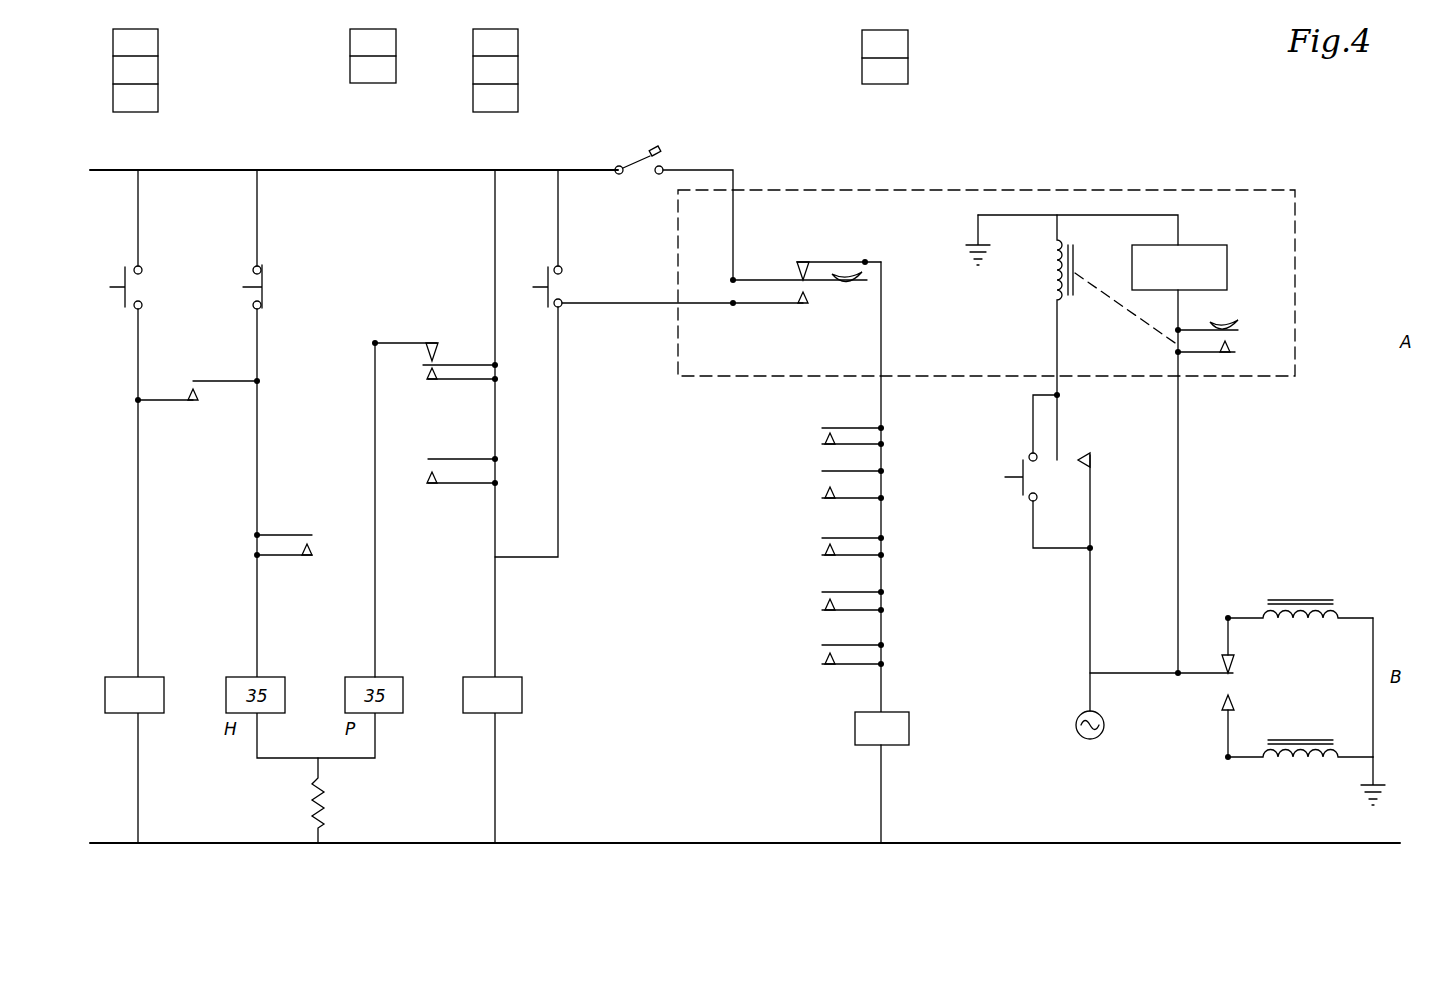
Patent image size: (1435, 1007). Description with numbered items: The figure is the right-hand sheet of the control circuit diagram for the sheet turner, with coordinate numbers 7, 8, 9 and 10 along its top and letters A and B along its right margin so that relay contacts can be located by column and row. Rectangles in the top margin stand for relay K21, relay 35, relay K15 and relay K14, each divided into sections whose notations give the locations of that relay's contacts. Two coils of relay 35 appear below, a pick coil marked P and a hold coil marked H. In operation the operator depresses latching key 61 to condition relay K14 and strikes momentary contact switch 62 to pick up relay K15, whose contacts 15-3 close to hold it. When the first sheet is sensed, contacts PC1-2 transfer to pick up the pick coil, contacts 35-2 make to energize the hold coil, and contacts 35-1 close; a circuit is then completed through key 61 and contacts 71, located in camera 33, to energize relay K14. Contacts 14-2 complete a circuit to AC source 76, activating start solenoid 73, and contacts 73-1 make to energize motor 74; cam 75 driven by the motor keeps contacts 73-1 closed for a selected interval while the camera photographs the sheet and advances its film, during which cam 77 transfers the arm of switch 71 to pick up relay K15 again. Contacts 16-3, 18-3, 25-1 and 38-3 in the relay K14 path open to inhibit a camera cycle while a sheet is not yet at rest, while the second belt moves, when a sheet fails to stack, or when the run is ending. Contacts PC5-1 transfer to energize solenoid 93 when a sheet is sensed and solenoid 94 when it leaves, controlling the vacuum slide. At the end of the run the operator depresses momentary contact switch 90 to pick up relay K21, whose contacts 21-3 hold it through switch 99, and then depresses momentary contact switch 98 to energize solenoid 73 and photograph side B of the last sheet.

The coordinate number 7 is at (157, 84).
The coordinate number 8 is at (515, 84).
The coordinate number 9 is at (906, 85).
The coordinate number 10 is at (1293, 130).
The relay 35 is at (388, 56).
The momentary contact switch 90 is at (148, 286).
The switch 99 is at (267, 283).
The contacts 21-3 is at (172, 398).
The contacts 35-2 is at (273, 557).
The contacts PC1-2 is at (458, 362).
The contacts 15-3 is at (457, 458).
The momentary contact switch 62 is at (565, 285).
The latching key 61 is at (646, 168).
The contacts 71 is at (776, 262).
The cam 77 is at (866, 282).
The camera 33 is at (1204, 189).
The start solenoid 73 is at (1052, 283).
The motor 74 is at (1233, 232).
The cam 75 is at (1226, 324).
The contacts 73-1 is at (1175, 352).
The contacts 38-3 is at (858, 427).
The contacts 35-1 is at (822, 481).
The contacts 16-3 is at (838, 538).
The contacts 18-3 is at (838, 592).
The contacts 25-1 is at (841, 645).
The momentary contact switch 98 is at (1012, 475).
The contacts 14-2 is at (1065, 458).
The AC source 76 is at (1078, 735).
The contacts PC5-1 is at (1225, 678).
The solenoid 94 is at (1300, 598).
The solenoid 93 is at (1300, 762).
The relay K21 is at (134, 695).
The relay K15 is at (492, 695).
The relay K14 is at (882, 728).